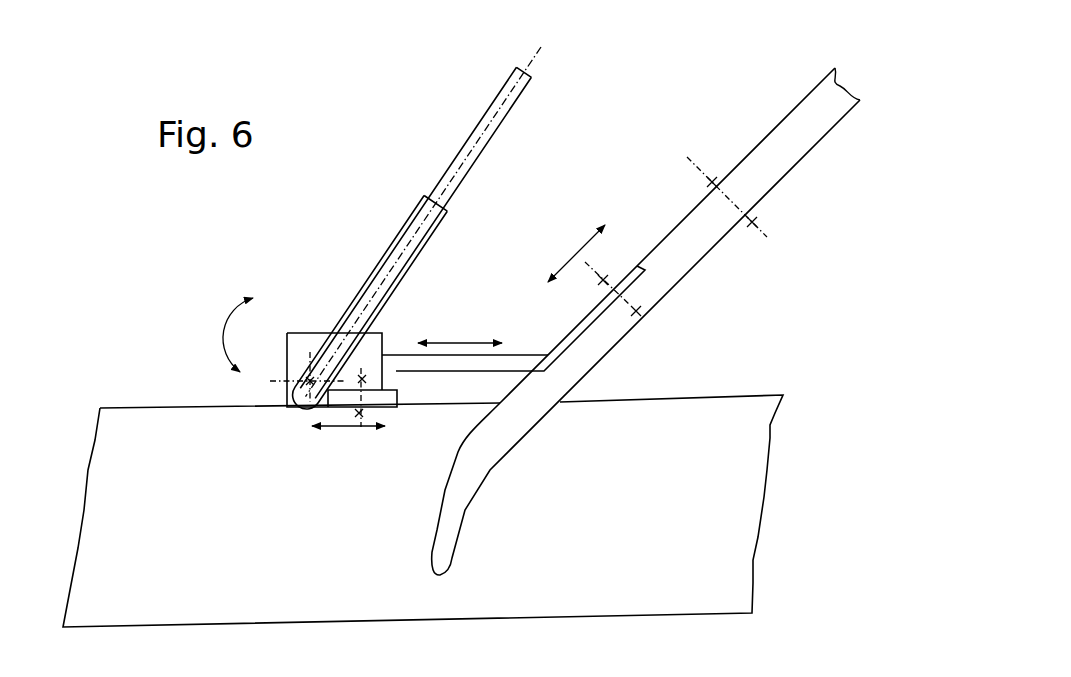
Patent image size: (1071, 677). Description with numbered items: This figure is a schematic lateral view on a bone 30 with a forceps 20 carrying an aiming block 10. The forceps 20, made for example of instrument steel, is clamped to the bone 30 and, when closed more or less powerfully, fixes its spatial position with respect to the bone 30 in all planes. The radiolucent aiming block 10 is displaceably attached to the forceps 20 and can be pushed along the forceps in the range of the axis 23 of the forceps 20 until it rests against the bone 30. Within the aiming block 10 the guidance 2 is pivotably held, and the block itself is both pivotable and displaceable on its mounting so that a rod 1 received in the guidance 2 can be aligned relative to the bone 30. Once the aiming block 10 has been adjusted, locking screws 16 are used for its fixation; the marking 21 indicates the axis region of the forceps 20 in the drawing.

The rod 1 is at (470, 143).
The guidance 2 is at (392, 258).
The aiming block 10 is at (302, 347).
The locking screws 16 is at (358, 415).
The forceps 20 is at (760, 143).
The beam axis 21 is at (755, 230).
The axis of the forceps 23 is at (608, 280).
The bone 30 is at (178, 462).